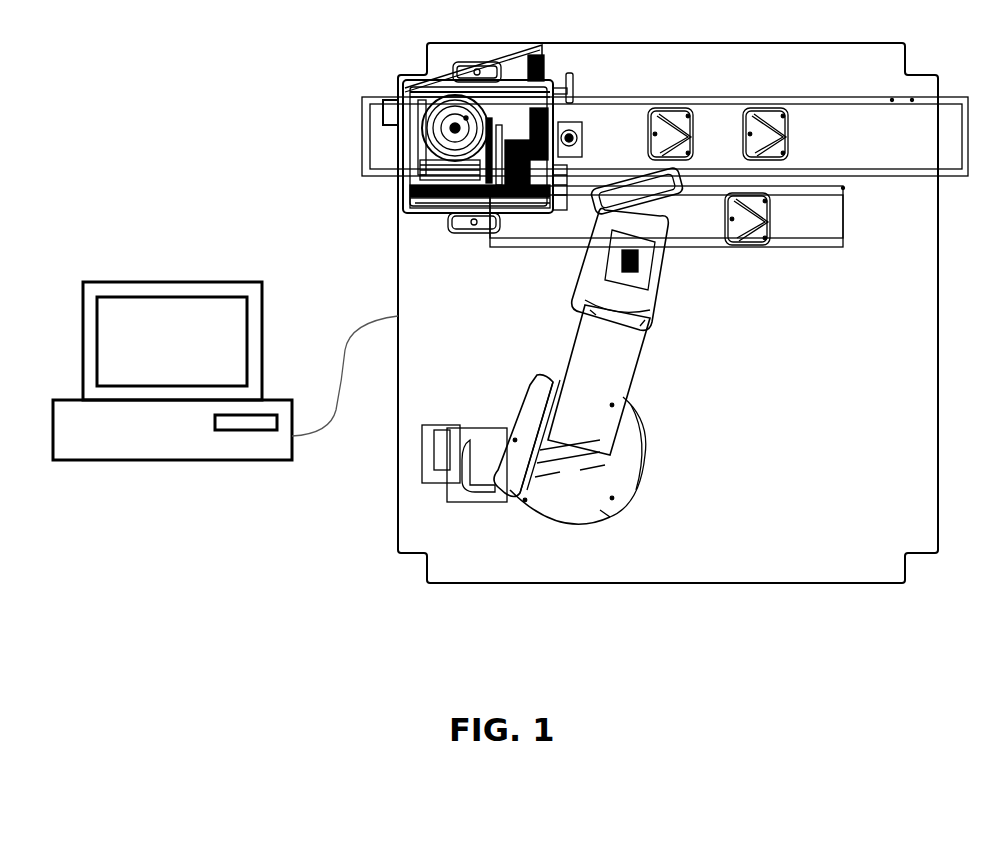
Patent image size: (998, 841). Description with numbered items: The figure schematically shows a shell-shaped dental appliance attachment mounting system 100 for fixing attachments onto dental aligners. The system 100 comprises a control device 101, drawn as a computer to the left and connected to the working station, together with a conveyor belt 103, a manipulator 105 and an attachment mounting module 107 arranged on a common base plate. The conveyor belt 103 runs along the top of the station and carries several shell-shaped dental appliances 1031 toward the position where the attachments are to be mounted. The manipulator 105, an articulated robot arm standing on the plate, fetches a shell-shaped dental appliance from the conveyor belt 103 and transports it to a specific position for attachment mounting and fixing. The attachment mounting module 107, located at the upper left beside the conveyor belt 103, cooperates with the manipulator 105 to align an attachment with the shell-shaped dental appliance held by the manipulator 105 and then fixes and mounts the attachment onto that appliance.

The shell-shaped dental appliance attachment mounting system 100 is at (242, 70).
The control device 101 is at (150, 290).
The conveyor belt 103 is at (875, 157).
The shell-shaped dental appliances 1031 is at (770, 118).
The manipulator 105 is at (623, 353).
The attachment mounting module 107 is at (418, 215).